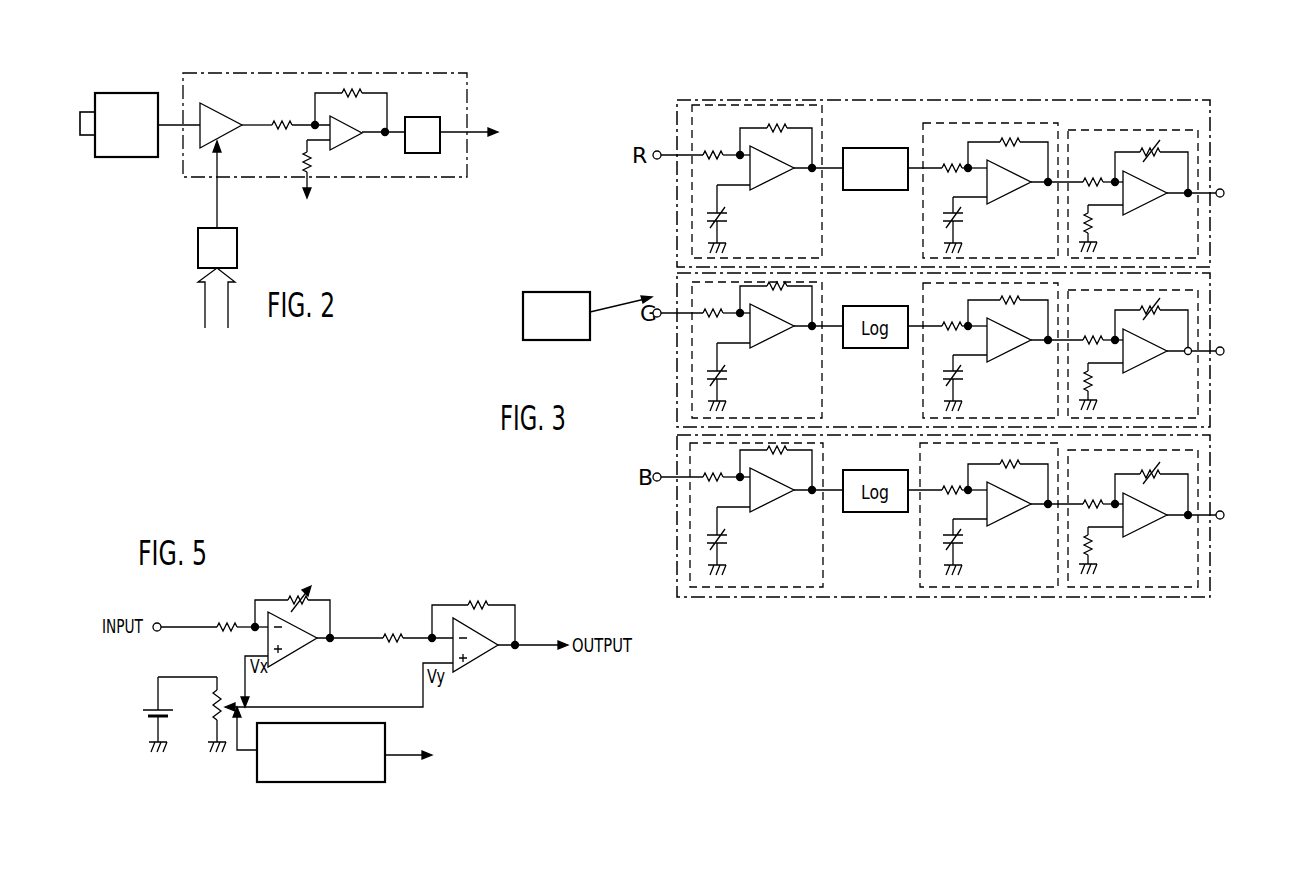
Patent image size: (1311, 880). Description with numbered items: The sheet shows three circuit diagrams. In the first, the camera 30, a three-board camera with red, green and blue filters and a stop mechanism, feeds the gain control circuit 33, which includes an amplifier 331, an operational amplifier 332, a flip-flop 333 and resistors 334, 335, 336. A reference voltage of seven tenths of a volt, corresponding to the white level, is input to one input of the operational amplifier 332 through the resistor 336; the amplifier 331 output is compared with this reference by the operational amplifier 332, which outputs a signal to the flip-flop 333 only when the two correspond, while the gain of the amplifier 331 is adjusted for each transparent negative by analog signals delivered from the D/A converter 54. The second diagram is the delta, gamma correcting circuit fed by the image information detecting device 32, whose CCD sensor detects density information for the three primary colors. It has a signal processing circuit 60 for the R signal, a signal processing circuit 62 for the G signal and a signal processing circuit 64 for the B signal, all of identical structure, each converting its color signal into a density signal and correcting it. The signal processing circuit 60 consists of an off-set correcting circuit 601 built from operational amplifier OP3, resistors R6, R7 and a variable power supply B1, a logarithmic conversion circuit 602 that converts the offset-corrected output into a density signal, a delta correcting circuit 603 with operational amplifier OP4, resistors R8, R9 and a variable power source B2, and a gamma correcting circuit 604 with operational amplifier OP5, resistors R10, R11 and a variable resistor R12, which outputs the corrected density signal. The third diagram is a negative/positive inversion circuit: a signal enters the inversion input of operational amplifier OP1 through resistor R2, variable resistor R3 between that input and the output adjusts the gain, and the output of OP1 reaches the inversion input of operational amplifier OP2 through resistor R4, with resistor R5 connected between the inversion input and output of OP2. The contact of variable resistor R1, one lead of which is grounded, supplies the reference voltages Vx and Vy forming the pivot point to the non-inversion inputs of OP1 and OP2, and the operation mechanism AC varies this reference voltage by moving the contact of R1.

In FIG. 2, the camera 30 is at (106, 94).
In FIG. 2, the gain control circuit 33 is at (252, 62).
In FIG. 2, the amplifier 331 is at (233, 102).
In FIG. 2, the operational amplifier 332 is at (343, 148).
In FIG. 2, the flip-flop 333 is at (413, 117).
In FIG. 2, the resistor 334 is at (290, 100).
In FIG. 2, the resistor 335 is at (352, 88).
In FIG. 2, the resistor 336 is at (300, 158).
In FIG. 2, the D/A converter 54 is at (198, 238).
In FIG. 3, the image information detecting device 32 is at (560, 341).
In FIG. 3, the signal processing circuit 60 is at (1103, 100).
In FIG. 3, the off-set correcting circuit 601 is at (801, 104).
In FIG. 3, the logarithmic conversion circuit 602 is at (885, 148).
In FIG. 3, the delta correcting circuit 603 is at (1035, 123).
In FIG. 3, the gamma correcting circuit 604 is at (1145, 130).
In FIG. 3, the signal processing circuit 62 is at (1210, 320).
In FIG. 3, the signal processing circuit 64 is at (1210, 485).
In FIG. 3, the resistor R6 is at (722, 140).
In FIG. 3, the resistor R7 is at (773, 124).
In FIG. 3, the resistor R8 is at (946, 163).
In FIG. 3, the resistor R9 is at (1005, 140).
In FIG. 3, the resistor R10 is at (1092, 223).
In FIG. 3, the resistor R11 is at (1095, 178).
In FIG. 3, the variable resistor R12 is at (1140, 148).
In FIG. 3, the operational amplifier OP3 is at (788, 178).
In FIG. 3, the operational amplifier OP4 is at (1022, 198).
In FIG. 3, the operational amplifier OP5 is at (1160, 199).
In FIG. 3, the variable power supply B1 is at (731, 218).
In FIG. 5, the variable power supply B1 is at (148, 716).
In FIG. 3, the variable power source B2 is at (966, 218).
In FIG. 5, the variable resistor R1 is at (212, 714).
In FIG. 5, the resistor R2 is at (233, 622).
In FIG. 5, the variable resistor R3 is at (295, 595).
In FIG. 5, the resistor R4 is at (393, 630).
In FIG. 5, the resistor R5 is at (485, 600).
In FIG. 5, the operational amplifier OP1 is at (308, 650).
In FIG. 5, the operational amplifier OP2 is at (484, 657).
In FIG. 5, the operation mechanism AC is at (257, 782).